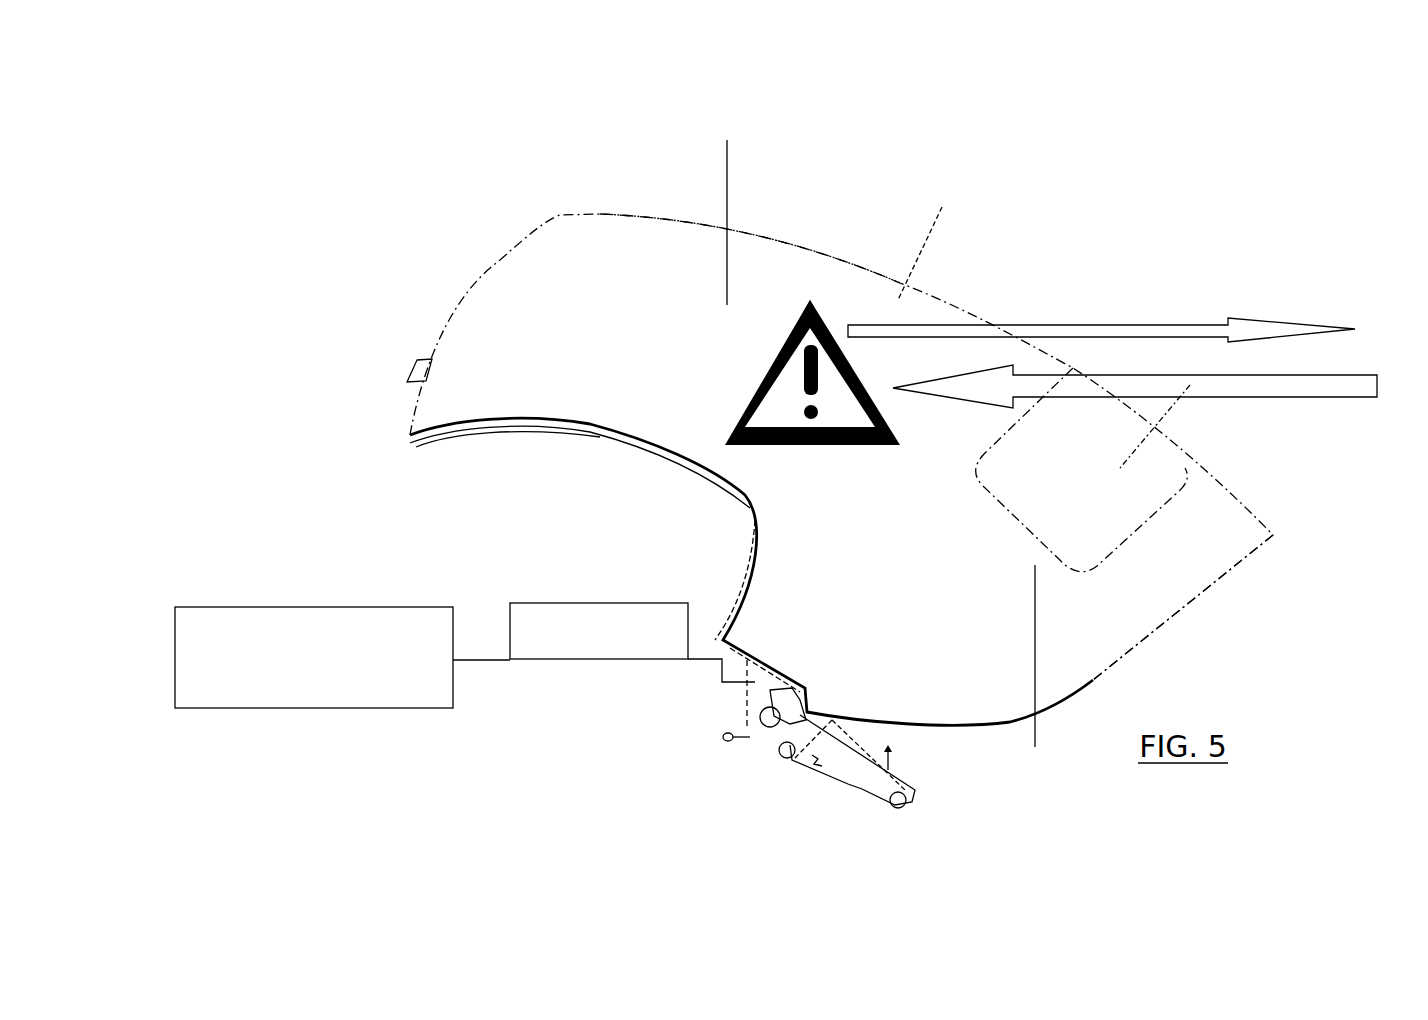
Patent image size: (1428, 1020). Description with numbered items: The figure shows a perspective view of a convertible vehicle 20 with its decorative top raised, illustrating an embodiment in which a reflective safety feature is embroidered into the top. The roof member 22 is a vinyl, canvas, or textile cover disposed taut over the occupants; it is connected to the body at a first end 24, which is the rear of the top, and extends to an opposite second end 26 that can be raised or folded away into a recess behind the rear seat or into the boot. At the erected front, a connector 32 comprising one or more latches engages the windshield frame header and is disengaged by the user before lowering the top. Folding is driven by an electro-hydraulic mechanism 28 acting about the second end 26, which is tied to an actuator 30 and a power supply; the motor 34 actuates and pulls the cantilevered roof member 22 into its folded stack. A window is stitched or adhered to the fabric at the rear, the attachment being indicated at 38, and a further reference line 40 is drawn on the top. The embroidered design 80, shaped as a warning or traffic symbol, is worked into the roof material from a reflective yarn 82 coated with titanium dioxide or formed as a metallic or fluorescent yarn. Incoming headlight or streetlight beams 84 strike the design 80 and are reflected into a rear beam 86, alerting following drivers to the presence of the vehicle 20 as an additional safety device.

The vehicle 20 is at (418, 198).
The roof member 22 is at (816, 224).
The first end 24 is at (1185, 620).
The second end 26 is at (447, 335).
The electro-hydraulic mechanism 28 is at (755, 702).
The actuator 30 is at (353, 605).
The connector 32 is at (408, 368).
The motor 34 is at (532, 648).
The window attachment 38 is at (1053, 688).
The vertical axis line 40 is at (745, 185).
The embroidered design 80 is at (792, 447).
The reflective yarn 82 is at (810, 300).
The headlight beam 84 is at (1240, 385).
The rear beam 86 is at (1085, 318).